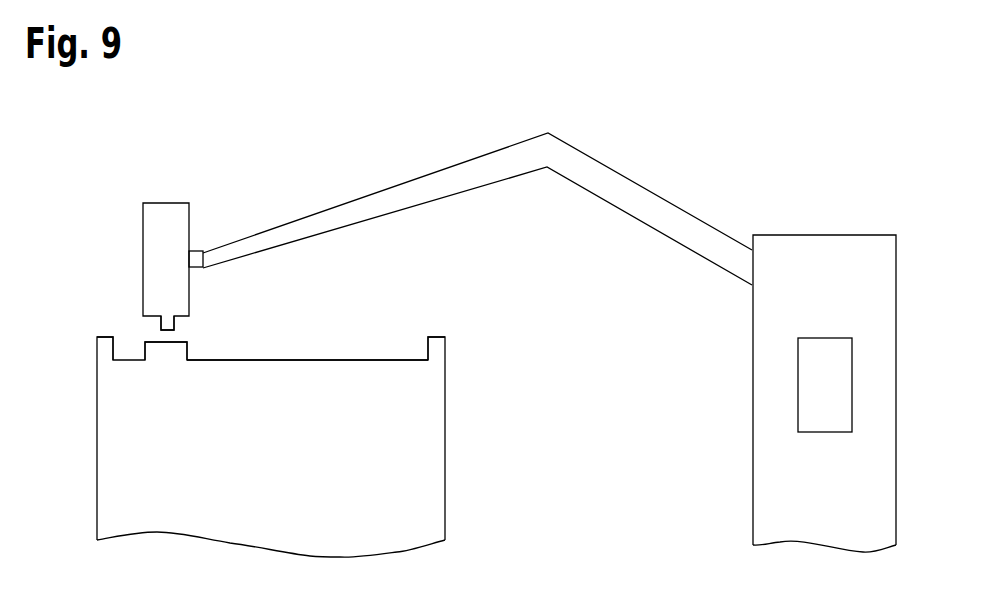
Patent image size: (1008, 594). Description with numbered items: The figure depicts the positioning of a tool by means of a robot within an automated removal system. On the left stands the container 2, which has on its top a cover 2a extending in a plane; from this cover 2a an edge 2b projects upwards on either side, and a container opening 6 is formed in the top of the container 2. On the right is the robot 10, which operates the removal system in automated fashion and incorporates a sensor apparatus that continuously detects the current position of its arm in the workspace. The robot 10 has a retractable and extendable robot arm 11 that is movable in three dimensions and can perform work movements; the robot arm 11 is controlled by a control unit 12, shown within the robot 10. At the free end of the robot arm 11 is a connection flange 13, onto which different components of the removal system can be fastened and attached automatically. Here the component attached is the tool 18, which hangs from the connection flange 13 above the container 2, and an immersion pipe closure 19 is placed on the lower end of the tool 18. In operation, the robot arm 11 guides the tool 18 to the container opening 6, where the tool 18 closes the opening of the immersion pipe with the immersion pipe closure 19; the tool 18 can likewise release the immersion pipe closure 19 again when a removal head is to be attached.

The container 2 is at (462, 447).
The cover 2a is at (340, 360).
The edge 2b is at (107, 353).
The container opening 6 is at (168, 350).
The robot 10 is at (859, 285).
The robot arm 11 is at (652, 192).
The control unit 12 is at (839, 395).
The connection flange 13 is at (195, 260).
The tool 18 is at (143, 260).
The immersion pipe closure 19 is at (167, 328).